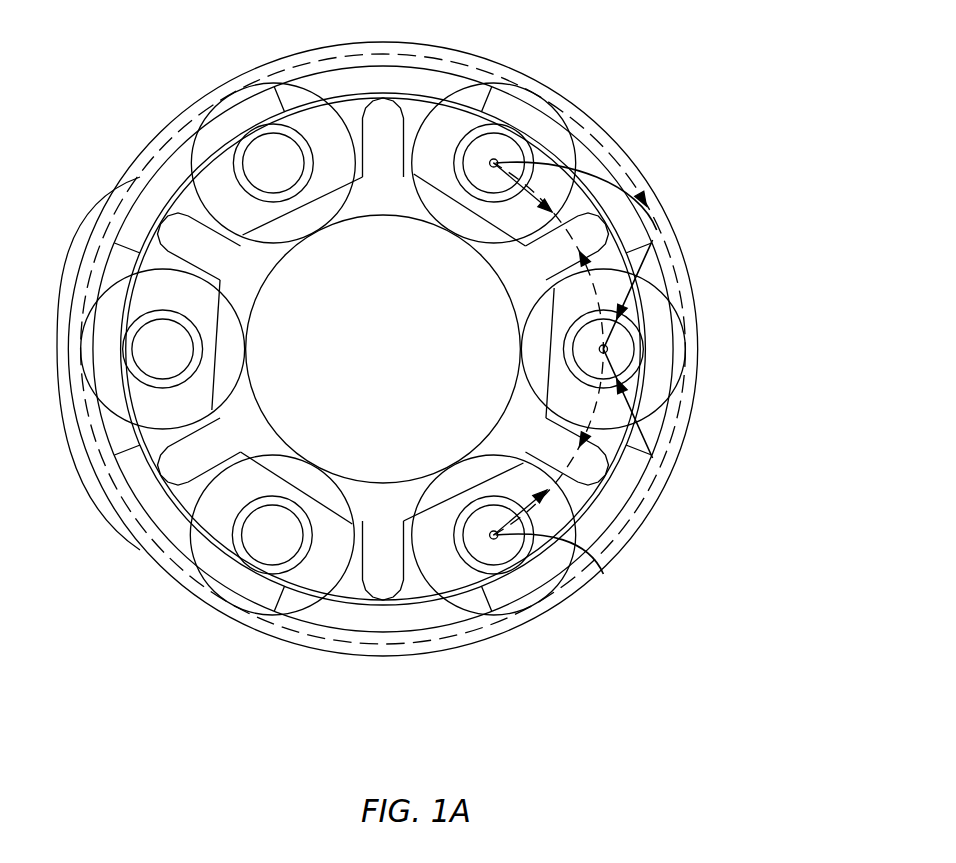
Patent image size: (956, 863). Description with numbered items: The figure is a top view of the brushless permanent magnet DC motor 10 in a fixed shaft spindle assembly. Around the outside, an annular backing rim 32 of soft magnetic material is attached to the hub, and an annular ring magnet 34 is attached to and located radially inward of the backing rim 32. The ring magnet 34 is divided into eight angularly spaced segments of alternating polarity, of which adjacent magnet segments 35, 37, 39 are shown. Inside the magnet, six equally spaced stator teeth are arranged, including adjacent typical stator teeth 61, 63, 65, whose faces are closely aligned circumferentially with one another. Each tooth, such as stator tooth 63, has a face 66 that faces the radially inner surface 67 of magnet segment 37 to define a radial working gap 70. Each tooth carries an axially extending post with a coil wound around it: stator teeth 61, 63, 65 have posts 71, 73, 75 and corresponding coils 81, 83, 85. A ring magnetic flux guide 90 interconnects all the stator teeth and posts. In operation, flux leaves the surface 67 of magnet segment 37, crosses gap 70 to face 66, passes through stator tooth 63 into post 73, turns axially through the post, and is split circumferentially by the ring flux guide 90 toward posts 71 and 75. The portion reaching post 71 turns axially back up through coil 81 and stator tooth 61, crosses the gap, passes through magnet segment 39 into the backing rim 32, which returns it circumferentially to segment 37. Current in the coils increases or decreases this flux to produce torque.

The brushless permanent magnet DC motor 10 is at (785, 271).
The backing rim 32 is at (382, 349).
The ring magnet 34 is at (66, 323).
The magnet segment 35 is at (383, 349).
The magnet segment 37 is at (382, 349).
The magnet segment 39 is at (548, 349).
The stator tooth 61 is at (383, 560).
The stator tooth 63 is at (550, 353).
The stator tooth 65 is at (576, 196).
The stator tooth face 66 is at (383, 349).
The inner surface of magnet segment 67 is at (603, 349).
The radial working gap 70 is at (627, 349).
The post 71 is at (464, 492).
The post 73 is at (383, 349).
The post 75 is at (494, 163).
The coil 81 is at (494, 535).
The coil 83 is at (603, 349).
The coil 85 is at (470, 210).
The ring magnetic flux guide 90 is at (383, 291).